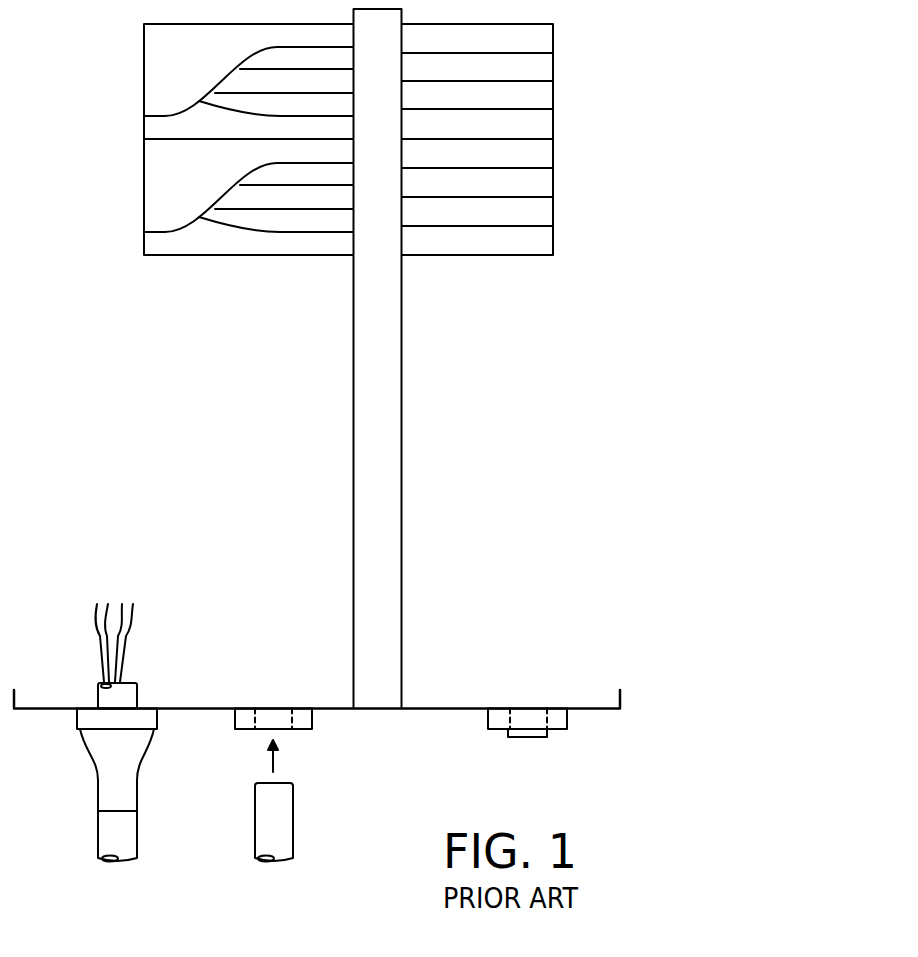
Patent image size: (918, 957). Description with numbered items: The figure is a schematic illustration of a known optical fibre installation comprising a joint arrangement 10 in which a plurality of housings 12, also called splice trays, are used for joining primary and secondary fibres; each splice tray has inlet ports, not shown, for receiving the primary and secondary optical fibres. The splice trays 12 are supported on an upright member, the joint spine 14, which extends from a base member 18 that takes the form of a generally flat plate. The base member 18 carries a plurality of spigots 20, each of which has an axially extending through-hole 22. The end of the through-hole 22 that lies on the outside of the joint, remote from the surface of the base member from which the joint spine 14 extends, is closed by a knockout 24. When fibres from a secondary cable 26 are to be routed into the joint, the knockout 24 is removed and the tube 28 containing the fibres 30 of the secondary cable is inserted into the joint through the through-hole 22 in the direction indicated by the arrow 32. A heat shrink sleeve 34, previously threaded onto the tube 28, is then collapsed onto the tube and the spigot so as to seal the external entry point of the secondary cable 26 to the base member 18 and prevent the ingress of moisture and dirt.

The joint arrangement 10 is at (106, 366).
The housings 12 is at (542, 43).
The joint spine 14 is at (403, 516).
The base member 18 is at (607, 709).
The spigots 20 is at (312, 722).
The through-hole 22 is at (278, 710).
The knockout 24 is at (520, 737).
The secondary cable 26 is at (118, 870).
The tube 28 is at (138, 836).
The fibres 30 is at (116, 643).
The arrow 32 is at (275, 766).
The heat shrink sleeve 34 is at (98, 786).